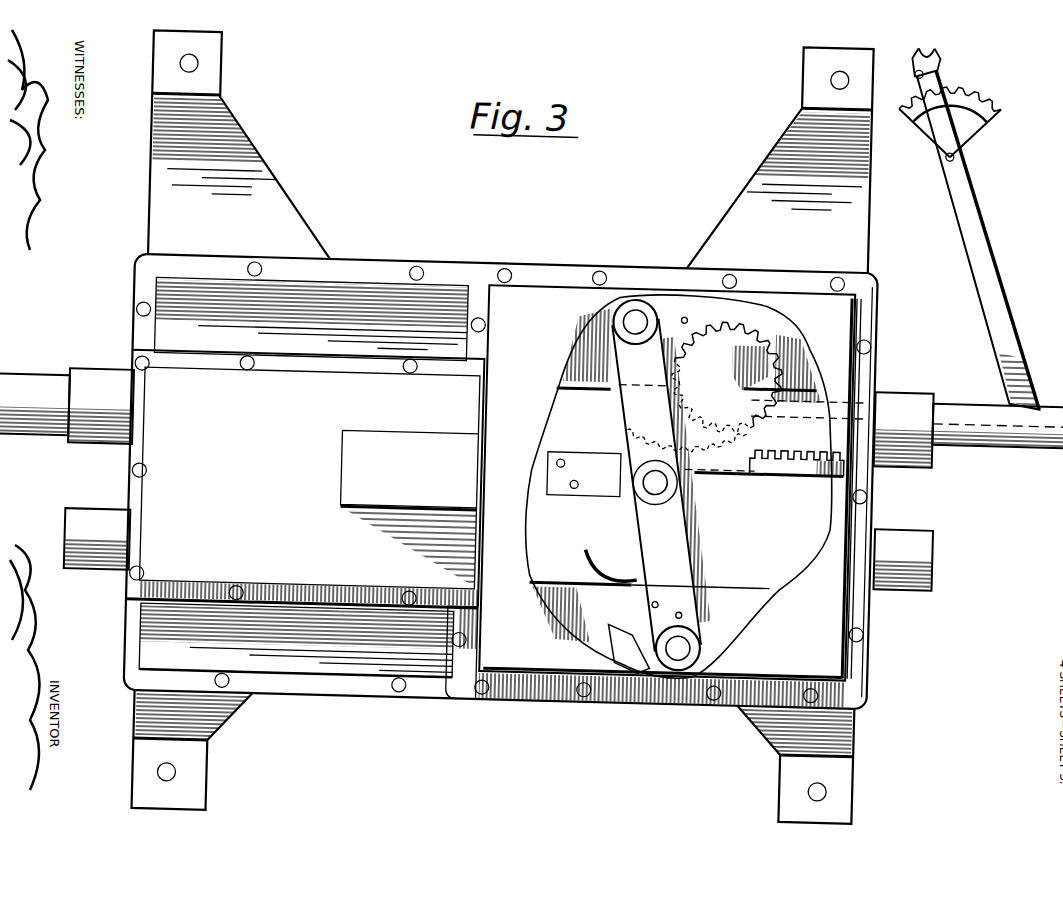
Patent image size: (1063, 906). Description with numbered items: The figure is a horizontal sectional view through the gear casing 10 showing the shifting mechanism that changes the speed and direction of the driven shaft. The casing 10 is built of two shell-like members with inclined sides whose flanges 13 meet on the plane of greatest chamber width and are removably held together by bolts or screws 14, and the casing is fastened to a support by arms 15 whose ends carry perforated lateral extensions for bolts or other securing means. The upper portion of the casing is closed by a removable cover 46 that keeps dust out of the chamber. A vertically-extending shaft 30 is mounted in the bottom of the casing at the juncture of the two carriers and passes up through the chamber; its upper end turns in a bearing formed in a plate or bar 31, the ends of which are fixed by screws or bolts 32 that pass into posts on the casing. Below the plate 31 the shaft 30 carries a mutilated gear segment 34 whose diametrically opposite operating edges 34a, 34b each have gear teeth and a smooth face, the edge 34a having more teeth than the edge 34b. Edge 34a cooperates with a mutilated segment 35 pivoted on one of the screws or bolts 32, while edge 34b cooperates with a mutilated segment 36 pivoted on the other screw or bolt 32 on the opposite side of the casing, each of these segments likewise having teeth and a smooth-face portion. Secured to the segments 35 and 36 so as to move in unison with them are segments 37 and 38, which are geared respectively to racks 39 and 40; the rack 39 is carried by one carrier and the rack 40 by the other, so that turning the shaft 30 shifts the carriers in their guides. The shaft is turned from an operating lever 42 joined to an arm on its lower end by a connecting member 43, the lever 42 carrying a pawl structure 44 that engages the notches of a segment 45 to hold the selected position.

The gear casing 10 is at (365, 295).
The flanges 13 is at (341, 683).
The bolts or screws 14 is at (420, 683).
The arms 15 is at (265, 124).
The vertically-extending shaft 30 is at (650, 460).
The plate or bar 31 is at (622, 392).
The screws or bolts 32 is at (637, 309).
The mutilated gear segment 34 is at (676, 469).
The operating edge 34a is at (772, 417).
The operating edge 34b is at (593, 541).
The mutilated segment 35 is at (686, 303).
The mutilated segment 36 is at (644, 637).
The segment 37 is at (727, 377).
The segment 38 is at (627, 583).
The rack 39 is at (772, 467).
The rack 40 is at (630, 482).
The operating lever 42 is at (984, 208).
The connecting member 43 is at (963, 383).
The pawl structure 44 is at (940, 52).
The segment 45 is at (972, 103).
The removable cover 46 is at (667, 484).